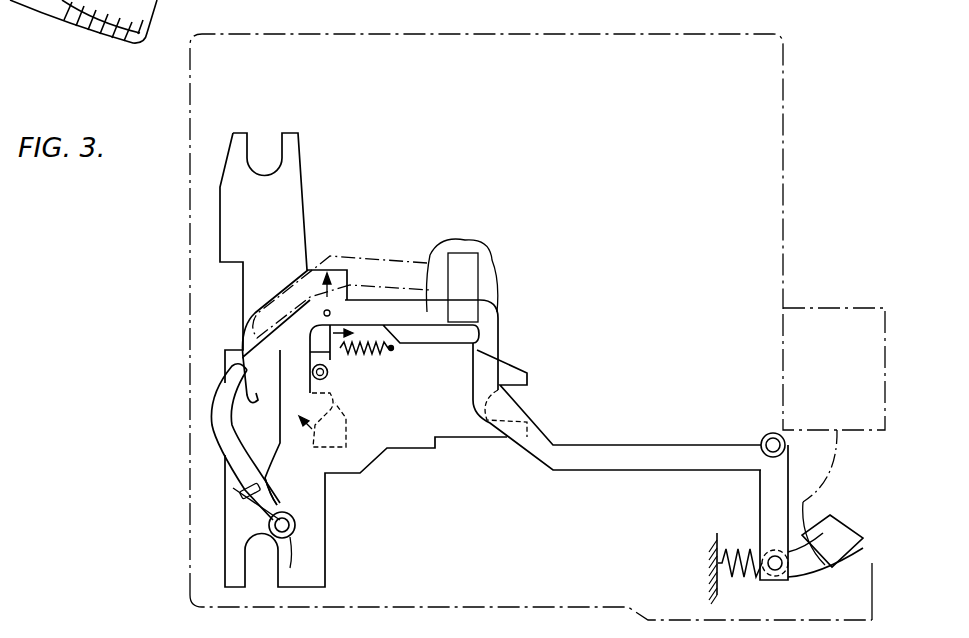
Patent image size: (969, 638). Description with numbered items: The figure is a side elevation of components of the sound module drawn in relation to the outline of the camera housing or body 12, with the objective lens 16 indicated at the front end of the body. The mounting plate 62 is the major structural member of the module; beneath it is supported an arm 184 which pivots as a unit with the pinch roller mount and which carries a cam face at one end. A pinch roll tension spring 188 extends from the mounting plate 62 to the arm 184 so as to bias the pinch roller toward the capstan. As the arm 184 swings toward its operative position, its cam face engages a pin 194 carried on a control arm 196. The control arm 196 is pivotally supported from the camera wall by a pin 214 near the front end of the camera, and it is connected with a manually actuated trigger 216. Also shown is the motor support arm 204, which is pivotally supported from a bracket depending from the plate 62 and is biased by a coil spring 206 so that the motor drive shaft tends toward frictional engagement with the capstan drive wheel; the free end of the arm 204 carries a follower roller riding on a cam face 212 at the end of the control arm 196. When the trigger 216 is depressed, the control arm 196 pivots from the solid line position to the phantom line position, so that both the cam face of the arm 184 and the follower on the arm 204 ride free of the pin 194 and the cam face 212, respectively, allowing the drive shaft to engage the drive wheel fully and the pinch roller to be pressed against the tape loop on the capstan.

The housing or body 12 is at (645, 34).
The objective lens 16 is at (840, 307).
The mounting plate 62 is at (292, 189).
The arm 184 is at (328, 360).
The pinch roll tension spring 188 is at (372, 350).
The pin 194 is at (330, 315).
The control arm 196 is at (483, 338).
The motor support arm 204 is at (247, 458).
The coil spring 206 is at (278, 500).
The cam face 212 is at (288, 412).
The pin 214 is at (765, 432).
The trigger 216 is at (832, 528).